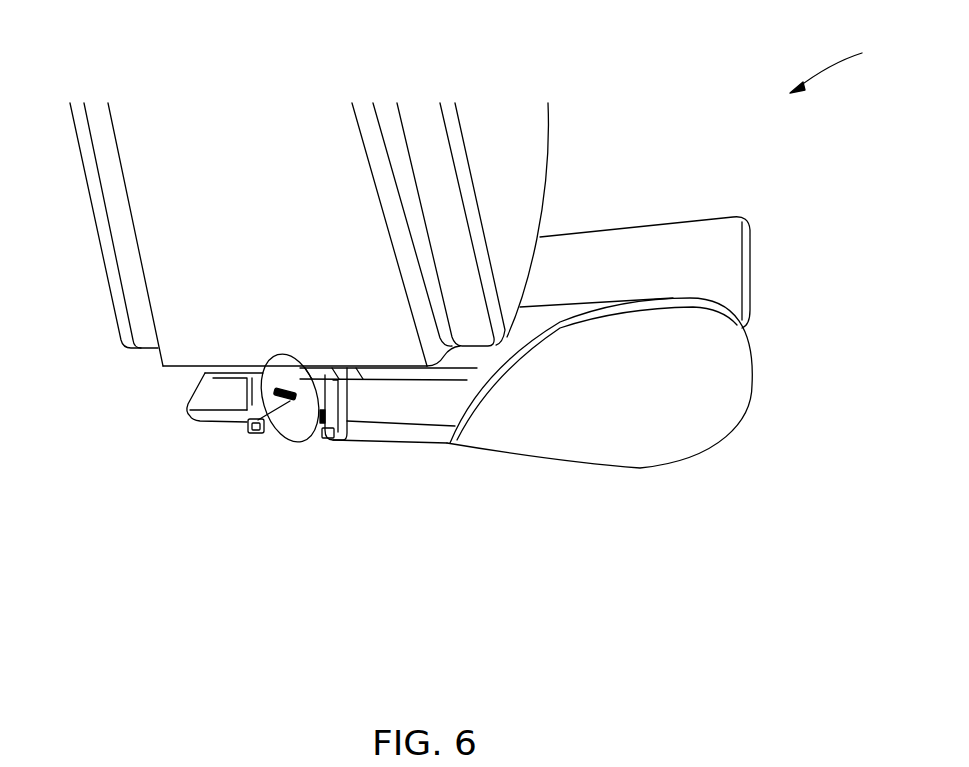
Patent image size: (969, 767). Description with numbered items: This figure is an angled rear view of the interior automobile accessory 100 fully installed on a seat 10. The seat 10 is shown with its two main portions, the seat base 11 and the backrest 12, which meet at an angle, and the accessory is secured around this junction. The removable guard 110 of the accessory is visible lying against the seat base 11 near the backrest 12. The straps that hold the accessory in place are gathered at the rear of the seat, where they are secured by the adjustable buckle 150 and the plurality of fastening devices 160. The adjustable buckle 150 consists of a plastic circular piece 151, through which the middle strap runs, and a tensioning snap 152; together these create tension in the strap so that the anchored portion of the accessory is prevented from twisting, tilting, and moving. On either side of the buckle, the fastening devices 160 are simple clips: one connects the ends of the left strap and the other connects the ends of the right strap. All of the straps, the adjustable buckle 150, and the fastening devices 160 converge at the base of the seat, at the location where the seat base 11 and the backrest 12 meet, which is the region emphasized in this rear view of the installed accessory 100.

The interior automobile accessory 100 is at (846, 65).
The seat 10 is at (88, 233).
The backrest 12 is at (317, 143).
The seat base 11 is at (586, 422).
The removable guard 110 is at (705, 240).
The adjustable buckle 150 is at (198, 449).
The plastic circular piece 151 is at (292, 432).
The tensioning snap 152 is at (247, 428).
The fastening devices 160 is at (247, 416).